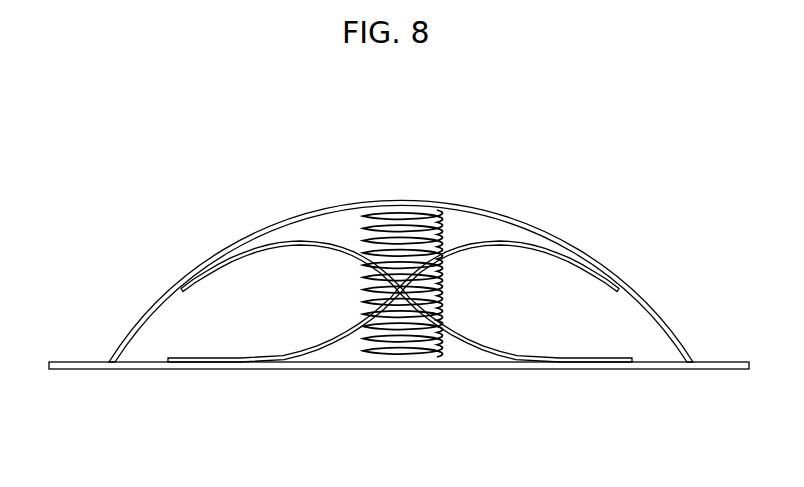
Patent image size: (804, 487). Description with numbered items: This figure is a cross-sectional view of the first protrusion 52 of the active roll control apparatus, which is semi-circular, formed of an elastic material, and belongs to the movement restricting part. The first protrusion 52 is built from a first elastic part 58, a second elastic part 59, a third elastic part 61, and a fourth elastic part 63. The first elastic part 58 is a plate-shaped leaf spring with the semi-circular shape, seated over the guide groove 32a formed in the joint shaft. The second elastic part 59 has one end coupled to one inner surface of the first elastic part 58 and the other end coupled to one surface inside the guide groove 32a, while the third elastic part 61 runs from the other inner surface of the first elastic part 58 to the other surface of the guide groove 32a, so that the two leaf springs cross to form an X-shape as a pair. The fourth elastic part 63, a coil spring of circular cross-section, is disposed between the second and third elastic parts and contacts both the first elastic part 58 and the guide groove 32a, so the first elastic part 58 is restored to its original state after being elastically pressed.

The guide groove 32a is at (460, 370).
The first protrusion 52 is at (502, 180).
The first elastic part 58 is at (613, 270).
The second elastic part 59 is at (265, 243).
The third elastic part 61 is at (540, 245).
The fourth elastic part 63 is at (392, 206).